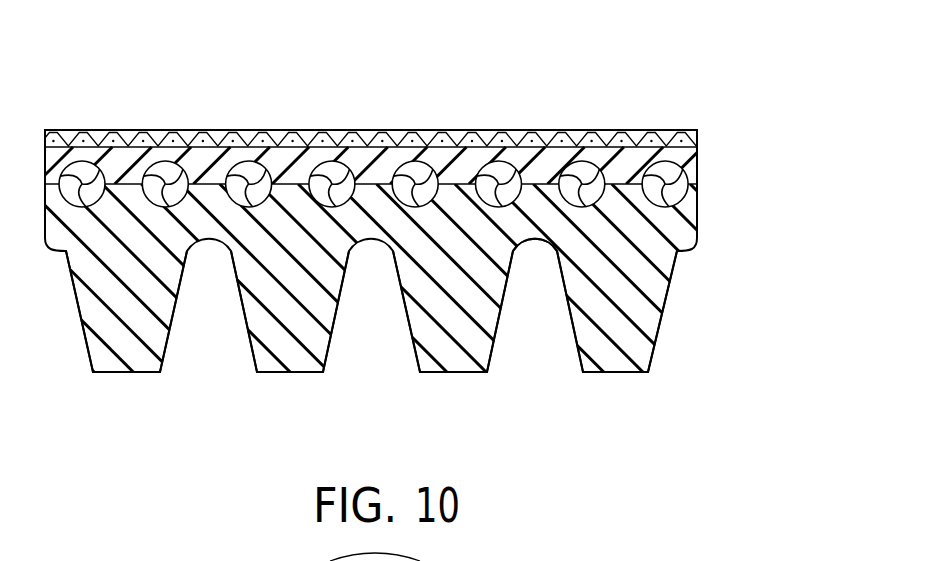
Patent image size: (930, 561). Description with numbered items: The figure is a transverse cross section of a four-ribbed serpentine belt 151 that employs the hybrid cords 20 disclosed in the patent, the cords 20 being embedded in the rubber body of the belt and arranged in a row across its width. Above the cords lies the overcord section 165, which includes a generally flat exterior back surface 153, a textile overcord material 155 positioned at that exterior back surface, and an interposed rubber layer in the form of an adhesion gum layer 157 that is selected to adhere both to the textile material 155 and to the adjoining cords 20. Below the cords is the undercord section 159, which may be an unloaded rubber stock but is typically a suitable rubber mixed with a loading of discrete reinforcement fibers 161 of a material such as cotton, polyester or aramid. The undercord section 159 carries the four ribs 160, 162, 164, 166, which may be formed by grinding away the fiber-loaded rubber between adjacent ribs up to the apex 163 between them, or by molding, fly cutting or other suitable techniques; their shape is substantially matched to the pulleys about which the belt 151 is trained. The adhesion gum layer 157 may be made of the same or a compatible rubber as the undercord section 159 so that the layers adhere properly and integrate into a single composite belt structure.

The serpentine belt 151 is at (492, 92).
The exterior back surface 153 is at (231, 131).
The textile overcord material 155 is at (46, 133).
The adhesion gum layer 157 is at (118, 152).
The cord 20 is at (356, 130).
The overcord section 165 is at (403, 119).
The undercord section 159 is at (439, 308).
The rib 160 is at (125, 372).
The discrete reinforcement fibers 161 is at (480, 335).
The rib 162 is at (330, 344).
The apex 163 is at (530, 250).
The rib 164 is at (455, 372).
The rib 166 is at (652, 350).